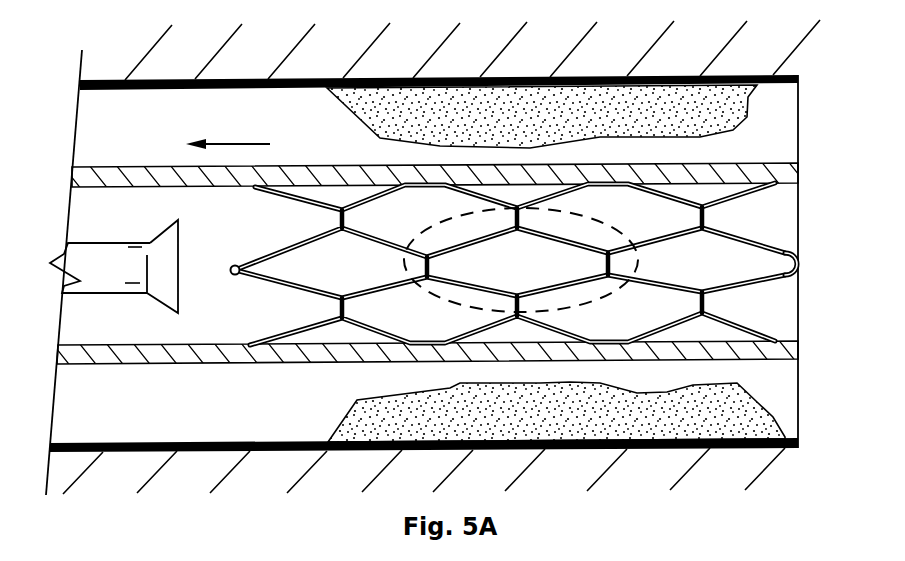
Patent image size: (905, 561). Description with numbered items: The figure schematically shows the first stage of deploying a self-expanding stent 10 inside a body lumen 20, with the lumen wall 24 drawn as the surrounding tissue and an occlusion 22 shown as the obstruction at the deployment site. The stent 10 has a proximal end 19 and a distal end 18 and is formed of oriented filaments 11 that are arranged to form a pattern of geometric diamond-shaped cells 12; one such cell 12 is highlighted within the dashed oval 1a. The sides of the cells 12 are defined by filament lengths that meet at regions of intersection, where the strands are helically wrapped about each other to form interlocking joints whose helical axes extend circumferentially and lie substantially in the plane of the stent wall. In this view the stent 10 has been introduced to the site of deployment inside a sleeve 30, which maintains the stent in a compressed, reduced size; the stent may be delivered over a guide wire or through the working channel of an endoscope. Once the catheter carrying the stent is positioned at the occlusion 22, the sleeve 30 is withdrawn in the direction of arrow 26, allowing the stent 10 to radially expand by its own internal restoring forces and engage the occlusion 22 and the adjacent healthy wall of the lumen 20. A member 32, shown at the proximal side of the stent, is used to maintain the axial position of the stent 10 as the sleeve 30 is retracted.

The self-expanding stent 10 is at (522, 300).
The oval 1a is at (500, 209).
The oriented filaments 11 is at (281, 252).
The diamond-shaped cells 12 is at (380, 228).
The distal end 18 is at (803, 282).
The proximal end 19 is at (233, 276).
The body lumen 20 is at (143, 417).
The occlusion 22 is at (352, 104).
The upper vessel wall 24 is at (246, 62).
The arrow 26 is at (232, 139).
The sleeve 30 is at (737, 163).
The member 32 is at (124, 253).